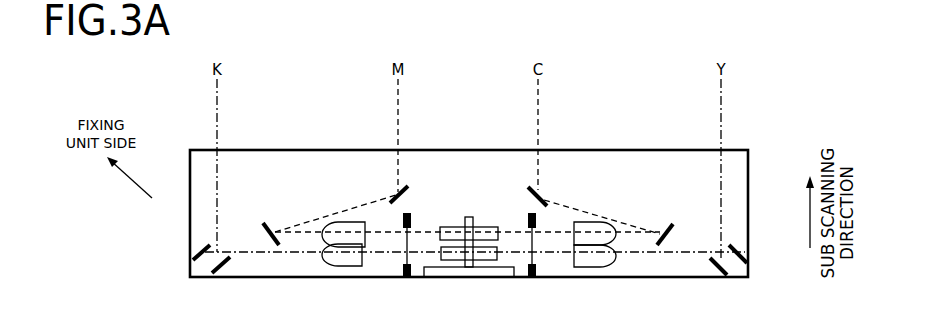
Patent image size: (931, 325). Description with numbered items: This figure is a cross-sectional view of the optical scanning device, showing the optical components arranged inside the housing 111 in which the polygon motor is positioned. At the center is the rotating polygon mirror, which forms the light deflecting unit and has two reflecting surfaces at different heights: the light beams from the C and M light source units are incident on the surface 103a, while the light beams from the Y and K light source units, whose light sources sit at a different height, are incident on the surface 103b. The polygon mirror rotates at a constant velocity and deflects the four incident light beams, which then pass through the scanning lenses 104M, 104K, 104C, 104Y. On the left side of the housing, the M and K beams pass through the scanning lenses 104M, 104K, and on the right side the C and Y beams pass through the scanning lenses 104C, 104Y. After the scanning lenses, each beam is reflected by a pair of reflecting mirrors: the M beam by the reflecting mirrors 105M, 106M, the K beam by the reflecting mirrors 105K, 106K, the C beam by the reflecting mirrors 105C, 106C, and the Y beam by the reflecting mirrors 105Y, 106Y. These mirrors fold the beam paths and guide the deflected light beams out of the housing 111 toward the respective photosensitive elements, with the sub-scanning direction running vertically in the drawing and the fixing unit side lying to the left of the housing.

The housing 111 is at (733, 150).
The reflecting mirror 105K is at (198, 276).
The reflecting mirror 106K is at (224, 277).
The reflecting mirror 105M is at (265, 221).
The reflecting mirror 106M is at (404, 188).
The reflecting mirror 106C is at (534, 190).
The reflecting mirror 105C is at (670, 223).
The reflecting mirror 106Y is at (711, 263).
The reflecting mirror 105Y is at (751, 258).
The scanning lens 104M is at (345, 238).
The scanning lens 104K is at (362, 262).
The scanning lens 104C is at (578, 236).
The scanning lens 104Y is at (592, 263).
The surface of the polygon mirror 103a is at (490, 240).
The surface of the polygon mirror 103b is at (445, 268).